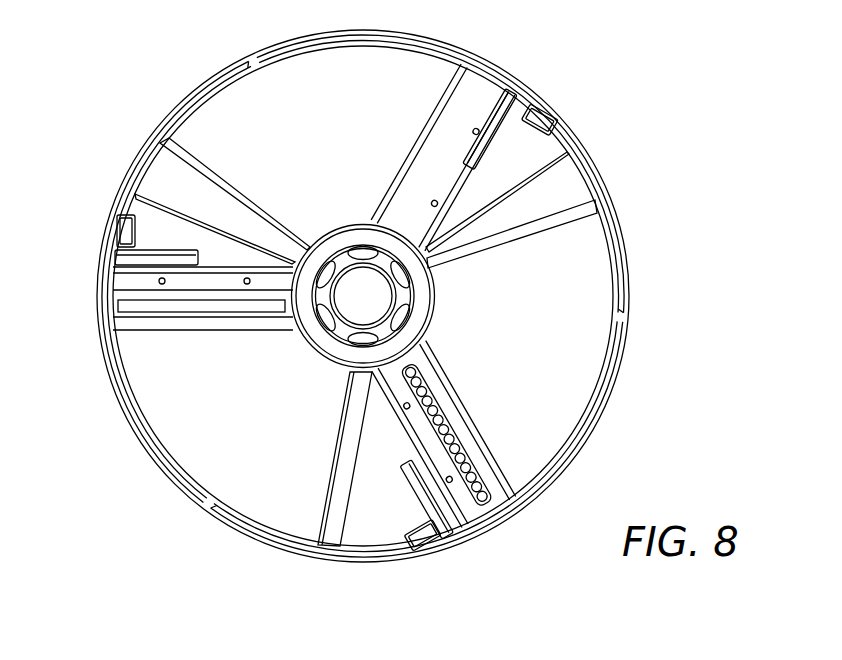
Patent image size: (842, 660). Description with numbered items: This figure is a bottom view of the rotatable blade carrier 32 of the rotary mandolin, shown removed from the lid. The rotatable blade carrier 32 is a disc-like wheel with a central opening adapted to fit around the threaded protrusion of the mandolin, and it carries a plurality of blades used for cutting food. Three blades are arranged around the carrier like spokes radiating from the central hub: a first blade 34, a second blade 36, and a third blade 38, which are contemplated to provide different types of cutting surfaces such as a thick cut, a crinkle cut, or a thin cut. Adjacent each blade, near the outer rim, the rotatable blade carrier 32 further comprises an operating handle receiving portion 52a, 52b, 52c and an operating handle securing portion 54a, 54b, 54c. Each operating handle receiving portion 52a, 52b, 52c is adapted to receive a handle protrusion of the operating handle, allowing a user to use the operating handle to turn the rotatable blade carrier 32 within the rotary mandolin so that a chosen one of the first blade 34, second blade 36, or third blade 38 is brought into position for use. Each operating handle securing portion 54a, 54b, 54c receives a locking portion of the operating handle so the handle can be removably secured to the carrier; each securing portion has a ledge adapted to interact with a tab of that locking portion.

The rotatable blade carrier 32 is at (572, 385).
The first blade 34 is at (494, 98).
The second blade 36 is at (120, 284).
The third blade 38 is at (468, 514).
The operating handle receiving portion 52a is at (525, 103).
The operating handle receiving portion 52b is at (122, 256).
The operating handle receiving portion 52c is at (445, 528).
The operating handle securing portion 54a is at (538, 124).
The operating handle securing portion 54b is at (127, 232).
The operating handle securing portion 54c is at (430, 541).